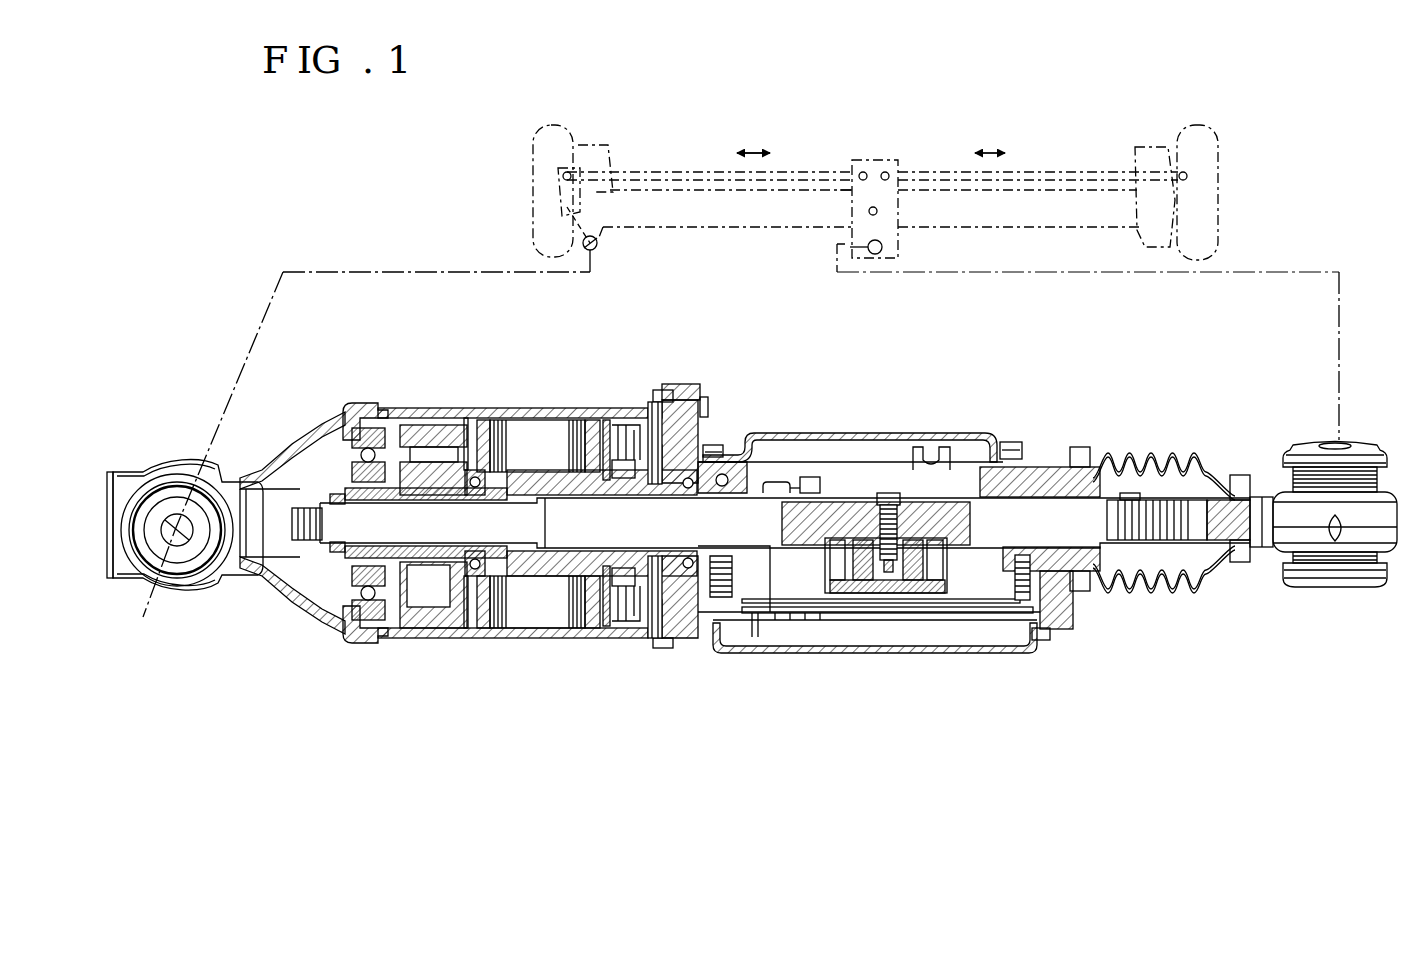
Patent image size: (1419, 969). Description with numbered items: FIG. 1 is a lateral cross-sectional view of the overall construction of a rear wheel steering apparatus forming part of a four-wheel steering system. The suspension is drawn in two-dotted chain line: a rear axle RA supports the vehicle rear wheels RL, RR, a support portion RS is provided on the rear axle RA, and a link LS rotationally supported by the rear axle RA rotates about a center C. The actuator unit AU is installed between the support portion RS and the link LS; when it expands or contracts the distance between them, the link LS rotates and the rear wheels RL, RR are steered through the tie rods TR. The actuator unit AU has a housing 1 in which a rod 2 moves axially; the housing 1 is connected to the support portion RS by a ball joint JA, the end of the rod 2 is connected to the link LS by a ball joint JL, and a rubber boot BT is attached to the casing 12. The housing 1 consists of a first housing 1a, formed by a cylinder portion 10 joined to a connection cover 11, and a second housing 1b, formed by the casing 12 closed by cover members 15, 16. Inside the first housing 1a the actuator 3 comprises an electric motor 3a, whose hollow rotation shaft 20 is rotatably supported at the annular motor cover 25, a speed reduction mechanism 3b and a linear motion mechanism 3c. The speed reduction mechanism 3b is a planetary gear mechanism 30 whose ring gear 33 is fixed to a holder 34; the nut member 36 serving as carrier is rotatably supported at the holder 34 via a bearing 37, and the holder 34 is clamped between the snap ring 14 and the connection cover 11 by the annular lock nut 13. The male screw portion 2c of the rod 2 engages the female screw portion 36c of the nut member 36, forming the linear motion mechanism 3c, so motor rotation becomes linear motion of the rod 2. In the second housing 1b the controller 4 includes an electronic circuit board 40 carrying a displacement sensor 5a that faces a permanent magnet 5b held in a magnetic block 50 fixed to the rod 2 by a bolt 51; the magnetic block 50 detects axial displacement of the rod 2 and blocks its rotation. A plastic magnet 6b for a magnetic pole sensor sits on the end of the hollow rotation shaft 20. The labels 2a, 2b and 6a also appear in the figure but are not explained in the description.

The housing 1 is at (829, 551).
The first housing 1a is at (594, 642).
The second housing 1b is at (816, 657).
The rod 2 is at (570, 532).
The threaded nut portion of rod 2a is at (762, 505).
The rod end sleeve 2b is at (1040, 452).
The male screw portion 2c is at (323, 580).
The actuator 3 is at (468, 523).
The electric motor 3a is at (582, 400).
The speed reduction mechanism 3b is at (432, 395).
The linear motion mechanism 3c is at (331, 578).
The controller 4 is at (885, 634).
The displacement sensor 5a is at (880, 596).
The permanent magnet 5b is at (918, 600).
The bolt 6a is at (658, 450).
The plastic magnet 6b is at (660, 632).
The cylinder portion 10 is at (532, 410).
The connection cover 11 is at (273, 577).
The casing 12 is at (702, 440).
The annular lock nut 13 is at (341, 428).
The snap ring 14 is at (466, 418).
The cover member 15 is at (930, 435).
The cover member 16 is at (1012, 650).
The hollow rotation shaft 20 is at (535, 600).
The annular motor cover 25 is at (478, 600).
The planetary gear mechanism 30 is at (440, 605).
The ring gear 33 is at (418, 425).
The holder 34 is at (403, 432).
The nut member 36 is at (348, 497).
The female screw portion 36c is at (368, 505).
The bearing 37 is at (355, 492).
The electronic circuit board 40 is at (950, 606).
The magnetic block 50 is at (957, 584).
The bolt 51 is at (886, 493).
The ball joint JA is at (173, 589).
The ball joint JL is at (1330, 587).
The rubber boot BT is at (1144, 586).
The actuator unit AU is at (703, 513).
The tie rod TR is at (677, 172).
The rear wheel RL is at (533, 192).
The rear wheel RR is at (1218, 207).
The rear axle RA is at (683, 229).
The support portion RS is at (600, 248).
The link LS is at (838, 242).
The center C is at (876, 214).